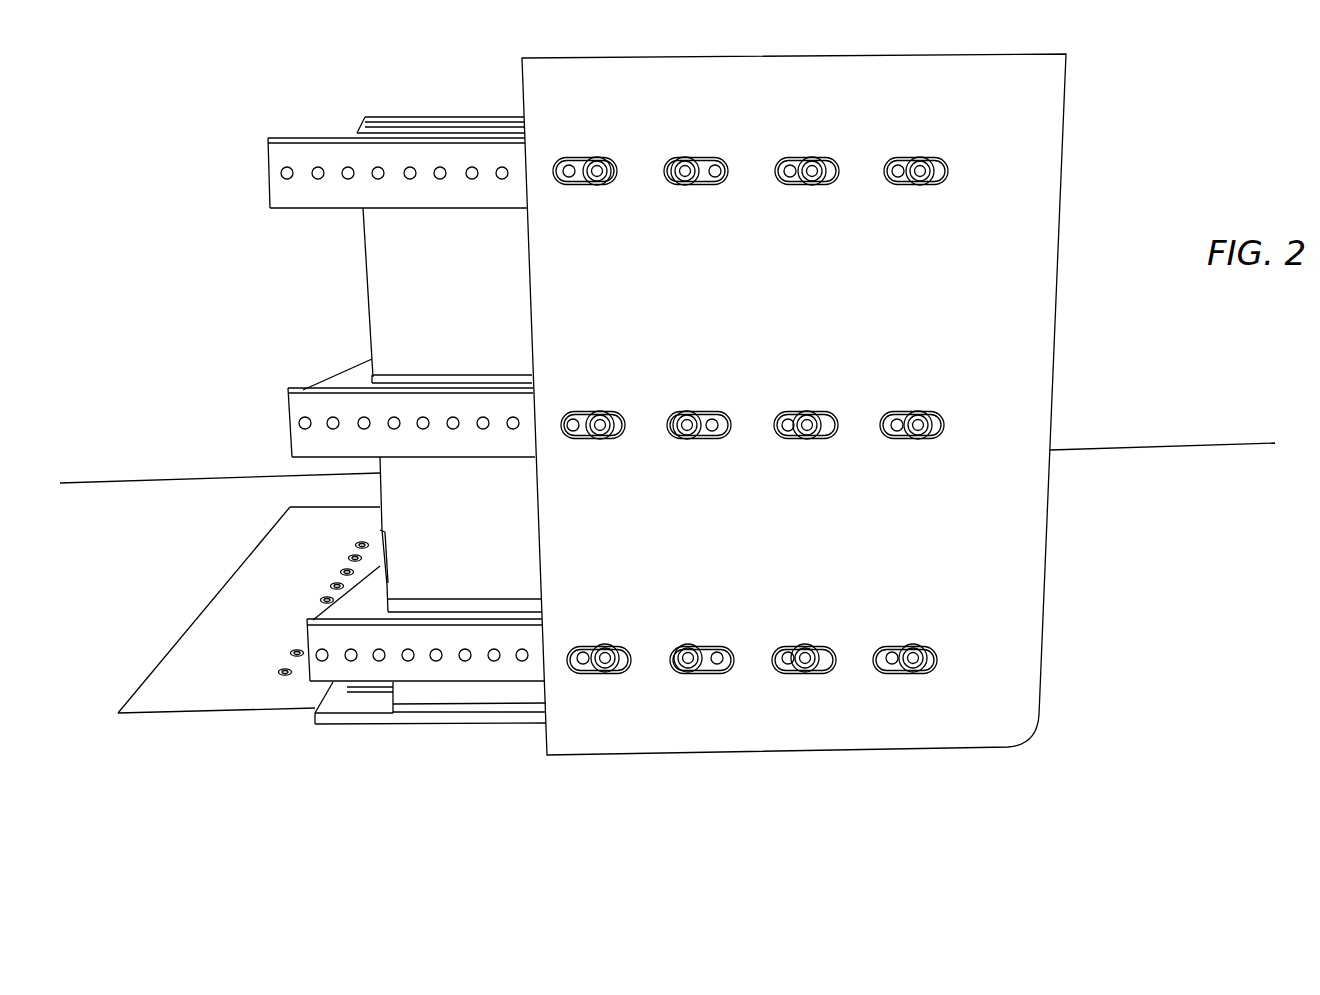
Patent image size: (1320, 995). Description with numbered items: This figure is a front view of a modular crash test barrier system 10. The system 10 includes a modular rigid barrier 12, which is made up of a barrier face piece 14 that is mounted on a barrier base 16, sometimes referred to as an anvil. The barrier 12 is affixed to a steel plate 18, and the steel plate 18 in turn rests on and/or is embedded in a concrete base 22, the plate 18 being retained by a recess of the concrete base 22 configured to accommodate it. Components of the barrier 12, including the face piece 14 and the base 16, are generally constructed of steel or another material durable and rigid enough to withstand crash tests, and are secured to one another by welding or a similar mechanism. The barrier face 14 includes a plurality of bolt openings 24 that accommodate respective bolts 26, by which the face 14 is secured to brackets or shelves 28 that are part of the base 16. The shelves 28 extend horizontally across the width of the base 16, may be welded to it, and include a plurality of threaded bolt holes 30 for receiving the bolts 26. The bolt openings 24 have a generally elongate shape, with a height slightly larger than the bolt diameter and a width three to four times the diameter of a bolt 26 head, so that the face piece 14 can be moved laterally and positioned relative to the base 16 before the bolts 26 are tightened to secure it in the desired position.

The modular crash test barrier system 10 is at (222, 301).
The modular rigid barrier 12 is at (448, 112).
The barrier face piece 14 is at (803, 309).
The barrier base 16 is at (460, 300).
The steel plate 18 is at (308, 582).
The concrete base 22 is at (185, 589).
The bolt openings 24 is at (575, 440).
The bolts 26 is at (623, 428).
The shelves 28 is at (408, 202).
The bolt holes 30 is at (317, 166).